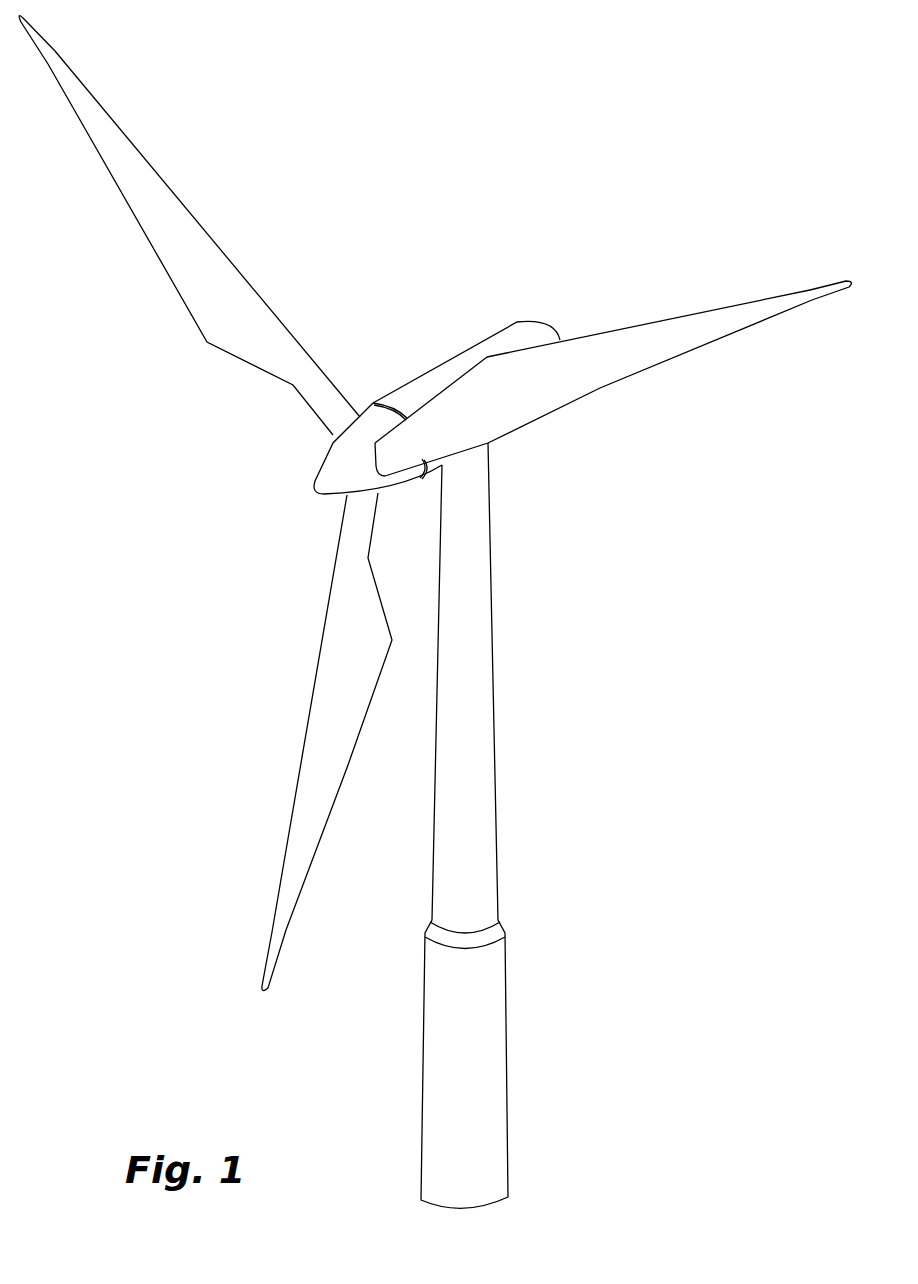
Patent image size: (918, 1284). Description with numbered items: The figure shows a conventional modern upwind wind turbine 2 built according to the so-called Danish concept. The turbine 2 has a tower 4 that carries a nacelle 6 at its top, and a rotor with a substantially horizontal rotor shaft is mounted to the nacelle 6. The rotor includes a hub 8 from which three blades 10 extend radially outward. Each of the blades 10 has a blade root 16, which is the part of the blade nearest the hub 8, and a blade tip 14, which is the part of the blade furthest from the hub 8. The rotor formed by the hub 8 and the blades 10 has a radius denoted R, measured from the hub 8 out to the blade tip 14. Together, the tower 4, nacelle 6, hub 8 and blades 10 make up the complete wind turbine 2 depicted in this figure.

The wind turbine 2 is at (604, 765).
The tower 4 is at (482, 685).
The nacelle 6 is at (428, 383).
The hub 8 is at (335, 470).
The blades 10 is at (222, 317).
The blade tip 14 is at (67, 73).
The blade root 16 is at (342, 423).